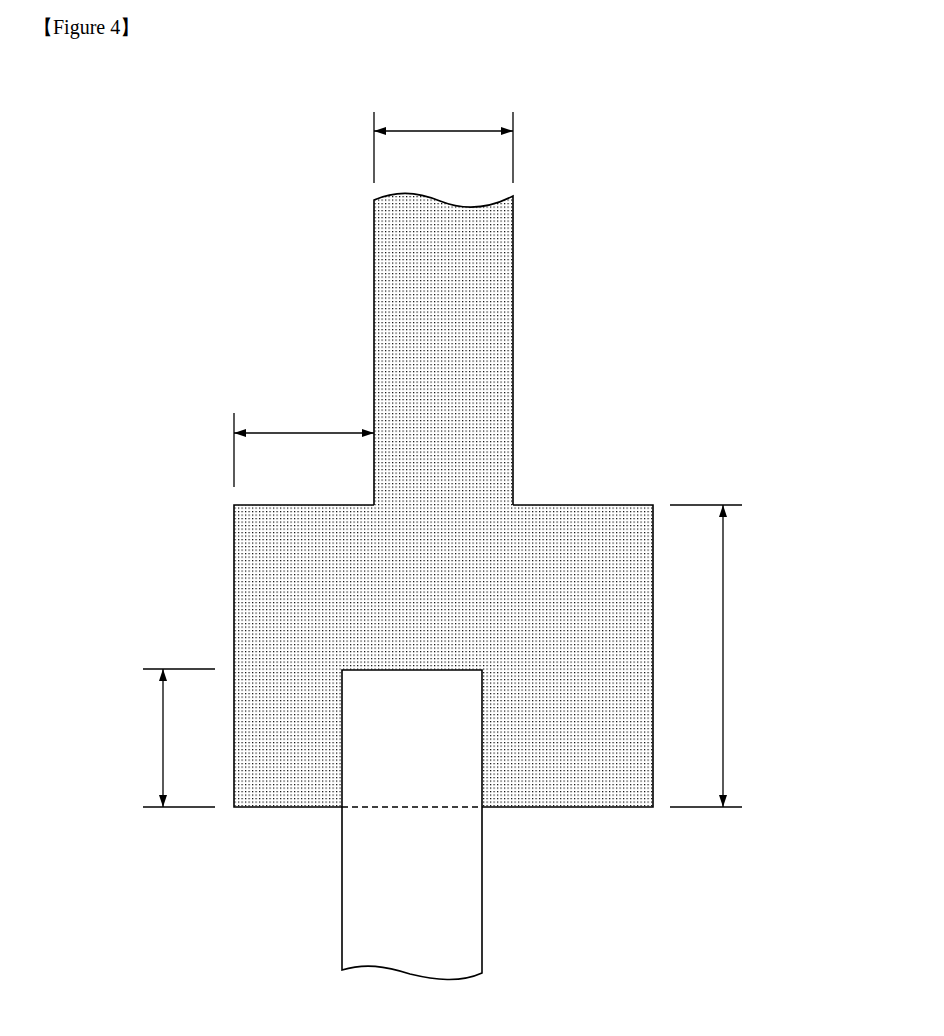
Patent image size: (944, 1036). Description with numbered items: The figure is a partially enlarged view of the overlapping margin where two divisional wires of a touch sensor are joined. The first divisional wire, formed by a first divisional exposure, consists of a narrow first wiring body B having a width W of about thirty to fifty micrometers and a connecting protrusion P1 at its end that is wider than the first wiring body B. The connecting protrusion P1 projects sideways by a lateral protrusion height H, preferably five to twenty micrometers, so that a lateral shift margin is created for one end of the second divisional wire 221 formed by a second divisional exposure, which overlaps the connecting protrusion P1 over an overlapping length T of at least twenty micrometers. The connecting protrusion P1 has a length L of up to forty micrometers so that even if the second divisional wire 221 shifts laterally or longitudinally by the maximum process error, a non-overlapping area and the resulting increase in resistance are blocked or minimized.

The first wiring body B is at (514, 352).
The connecting protrusion P1 is at (234, 583).
The second divisional wire 221 is at (482, 891).
The width of the first wiring body W is at (443, 124).
The lateral protrusion height H is at (304, 426).
The length of the connecting protrusion L is at (716, 656).
The overlapping length T is at (166, 738).